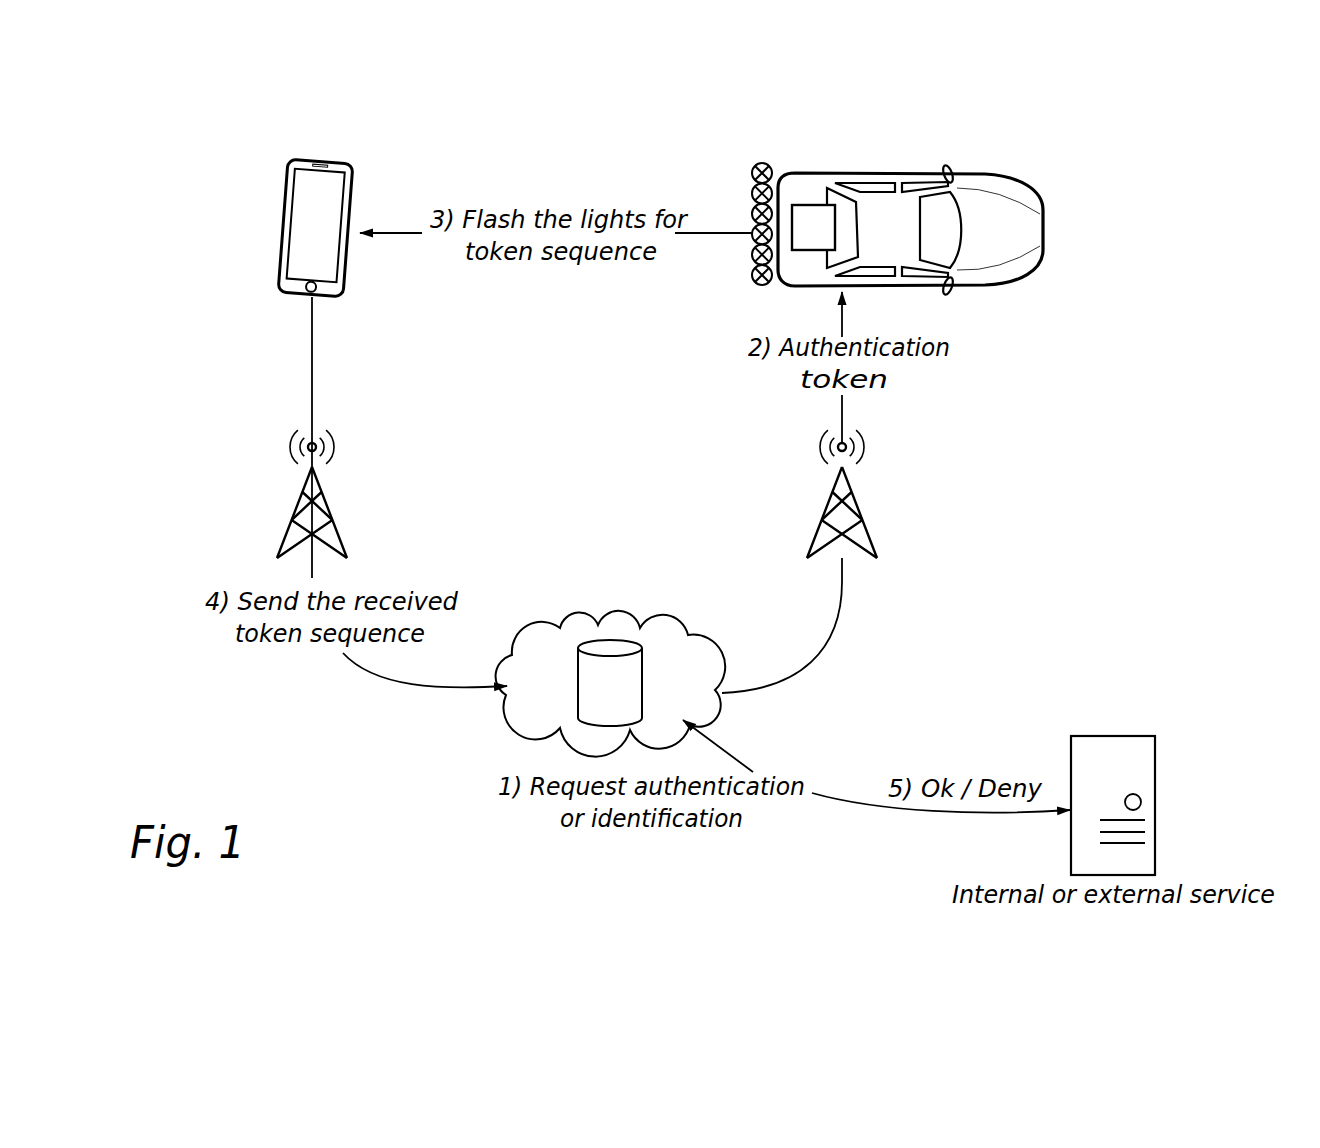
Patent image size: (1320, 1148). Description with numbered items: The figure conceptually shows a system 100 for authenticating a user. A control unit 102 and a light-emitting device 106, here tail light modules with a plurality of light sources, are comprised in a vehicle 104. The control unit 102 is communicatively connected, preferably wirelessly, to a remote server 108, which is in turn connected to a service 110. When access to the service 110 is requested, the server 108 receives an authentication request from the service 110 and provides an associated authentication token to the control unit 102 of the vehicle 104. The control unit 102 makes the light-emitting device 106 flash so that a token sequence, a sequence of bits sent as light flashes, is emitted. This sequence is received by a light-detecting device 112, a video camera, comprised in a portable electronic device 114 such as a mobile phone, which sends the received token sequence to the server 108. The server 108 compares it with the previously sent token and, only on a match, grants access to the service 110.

The system 100 is at (885, 211).
The control unit 102 is at (808, 205).
The vehicle 104 is at (1046, 233).
The light-emitting device 106 is at (747, 258).
The remote server 108 is at (545, 730).
The service 110 is at (1102, 736).
The light-detecting device 112 is at (269, 208).
The portable electronic device 114 is at (278, 212).